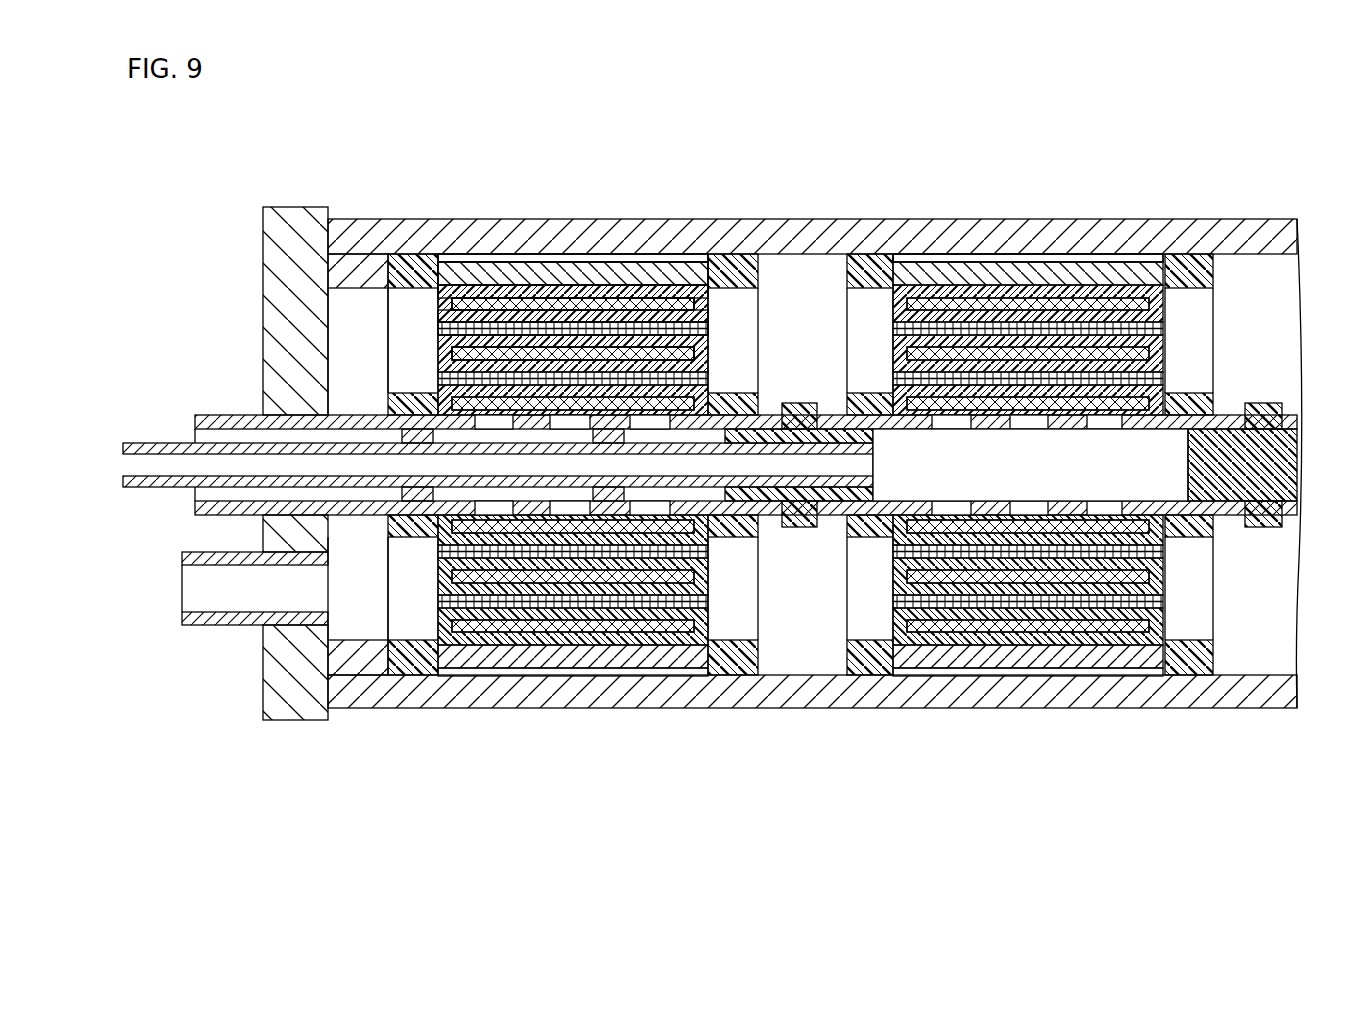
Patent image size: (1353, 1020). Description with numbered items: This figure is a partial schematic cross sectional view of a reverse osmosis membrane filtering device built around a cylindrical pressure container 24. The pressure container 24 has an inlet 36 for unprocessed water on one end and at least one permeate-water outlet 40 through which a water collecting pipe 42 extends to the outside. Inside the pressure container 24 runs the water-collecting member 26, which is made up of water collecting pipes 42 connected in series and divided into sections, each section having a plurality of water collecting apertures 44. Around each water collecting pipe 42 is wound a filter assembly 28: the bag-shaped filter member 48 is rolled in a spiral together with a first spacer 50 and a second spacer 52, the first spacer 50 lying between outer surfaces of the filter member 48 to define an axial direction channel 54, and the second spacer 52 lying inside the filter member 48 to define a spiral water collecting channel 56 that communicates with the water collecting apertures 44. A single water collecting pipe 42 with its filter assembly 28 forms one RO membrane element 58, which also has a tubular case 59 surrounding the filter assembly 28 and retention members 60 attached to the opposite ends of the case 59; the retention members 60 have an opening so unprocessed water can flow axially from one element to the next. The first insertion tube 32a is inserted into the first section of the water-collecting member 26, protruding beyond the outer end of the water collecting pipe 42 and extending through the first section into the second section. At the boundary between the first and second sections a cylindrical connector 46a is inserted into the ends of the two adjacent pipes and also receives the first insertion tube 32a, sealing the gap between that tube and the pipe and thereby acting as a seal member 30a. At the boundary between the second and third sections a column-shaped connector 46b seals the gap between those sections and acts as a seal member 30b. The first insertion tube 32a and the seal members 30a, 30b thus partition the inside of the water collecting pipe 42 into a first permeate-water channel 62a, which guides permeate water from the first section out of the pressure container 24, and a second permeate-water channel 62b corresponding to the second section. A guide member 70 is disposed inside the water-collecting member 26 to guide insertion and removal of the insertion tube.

The pressure container 24 is at (852, 219).
The water-collecting member 26 is at (722, 415).
The filter assembly 28 is at (800, 401).
The seal member 30a is at (797, 420).
The seal member 30b is at (1258, 412).
The first insertion tube 32a is at (160, 443).
The inlet 36 is at (265, 622).
The permeate-water outlet 40 is at (250, 505).
The water collecting pipe 42 is at (247, 415).
The water collecting apertures 44 is at (500, 505).
The connector 46a is at (797, 527).
The connector 46b is at (1262, 527).
The filter member 48 is at (487, 285).
The first spacer 50 is at (465, 290).
The second spacer 52 is at (513, 300).
The axial direction channel 54 is at (655, 305).
The water collecting channel 56 is at (628, 290).
The RO membrane element 58 is at (598, 262).
The case 59 is at (575, 268).
The retention members 60 is at (412, 262).
The first permeate-water channel 62a is at (373, 435).
The second permeate-water channel 62b is at (1058, 477).
The guide member 70 is at (600, 490).